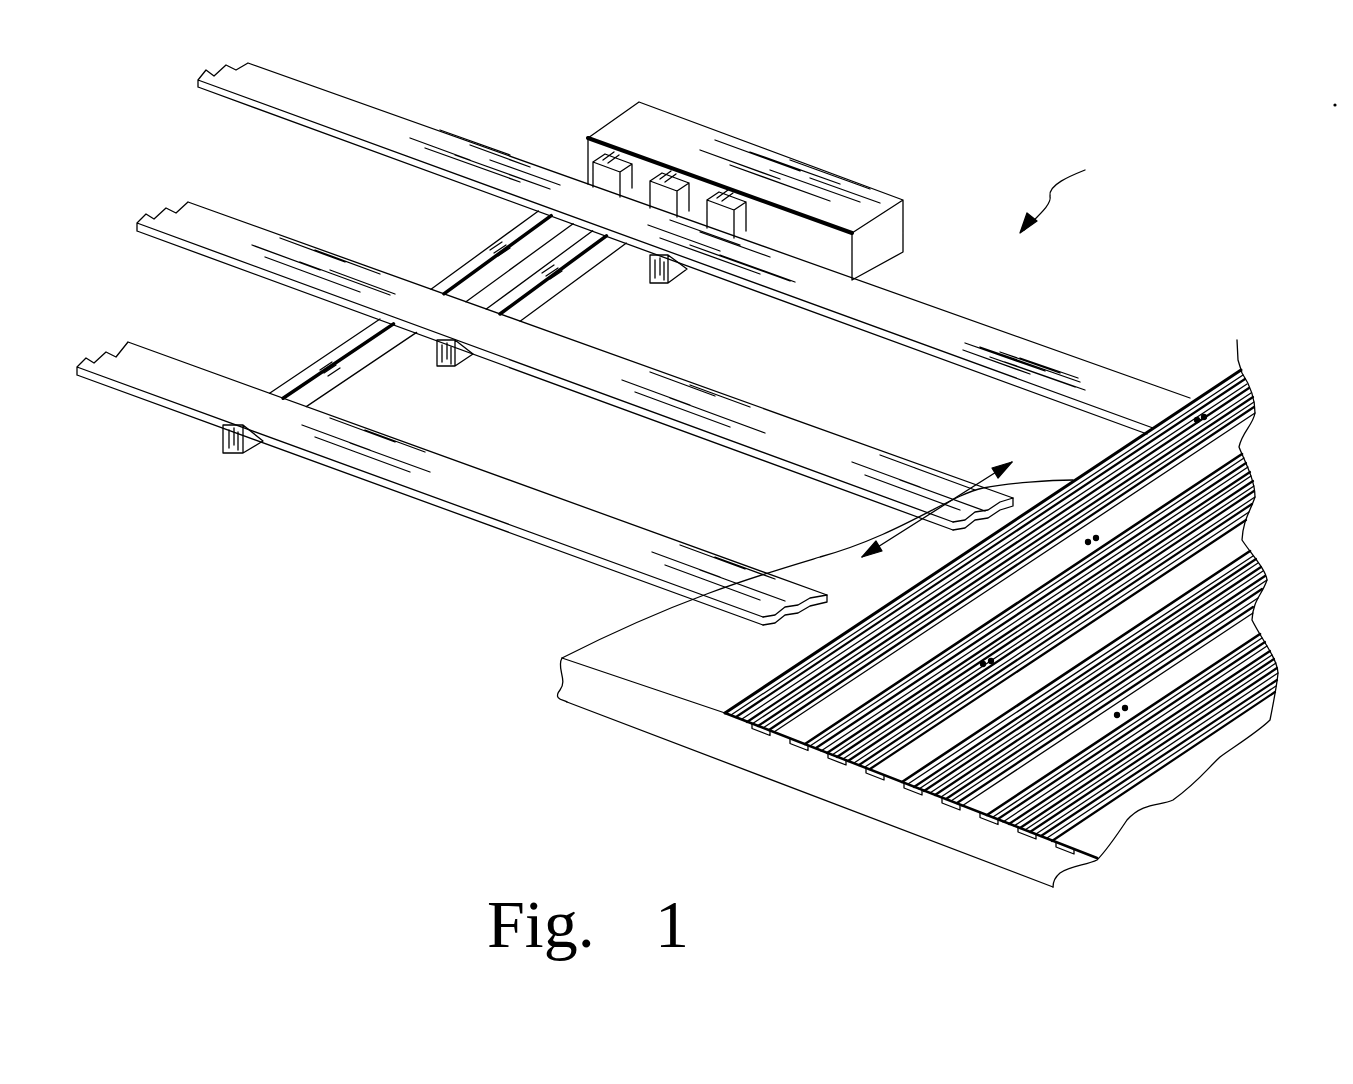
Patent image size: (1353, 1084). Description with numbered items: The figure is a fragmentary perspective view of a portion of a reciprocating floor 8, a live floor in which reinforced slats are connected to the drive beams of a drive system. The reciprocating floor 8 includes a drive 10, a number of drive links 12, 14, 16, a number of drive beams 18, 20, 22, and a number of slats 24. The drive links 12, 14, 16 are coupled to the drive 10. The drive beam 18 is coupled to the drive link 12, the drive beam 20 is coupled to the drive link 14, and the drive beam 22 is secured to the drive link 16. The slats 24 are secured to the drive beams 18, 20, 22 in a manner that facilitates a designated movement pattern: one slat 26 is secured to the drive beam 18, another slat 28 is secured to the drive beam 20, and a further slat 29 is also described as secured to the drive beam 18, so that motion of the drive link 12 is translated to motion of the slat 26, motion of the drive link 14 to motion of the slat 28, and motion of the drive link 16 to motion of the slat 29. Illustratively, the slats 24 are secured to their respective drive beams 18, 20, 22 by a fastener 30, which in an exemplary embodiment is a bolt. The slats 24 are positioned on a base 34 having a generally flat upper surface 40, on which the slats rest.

The reciprocating floor 8 is at (1059, 186).
The drive 10 is at (862, 198).
The drive link 12 is at (593, 178).
The drive link 14 is at (652, 190).
The drive link 16 is at (712, 214).
The drive beam 18 is at (190, 378).
The drive beam 20 is at (282, 248).
The drive beam 22 is at (358, 117).
The slats 24 is at (917, 762).
The slat 26 is at (1234, 452).
The slat 28 is at (1234, 432).
The slat 29 is at (1239, 384).
The fastener 30 is at (1250, 582).
The base 34 is at (650, 710).
The upper surface 40 is at (592, 645).